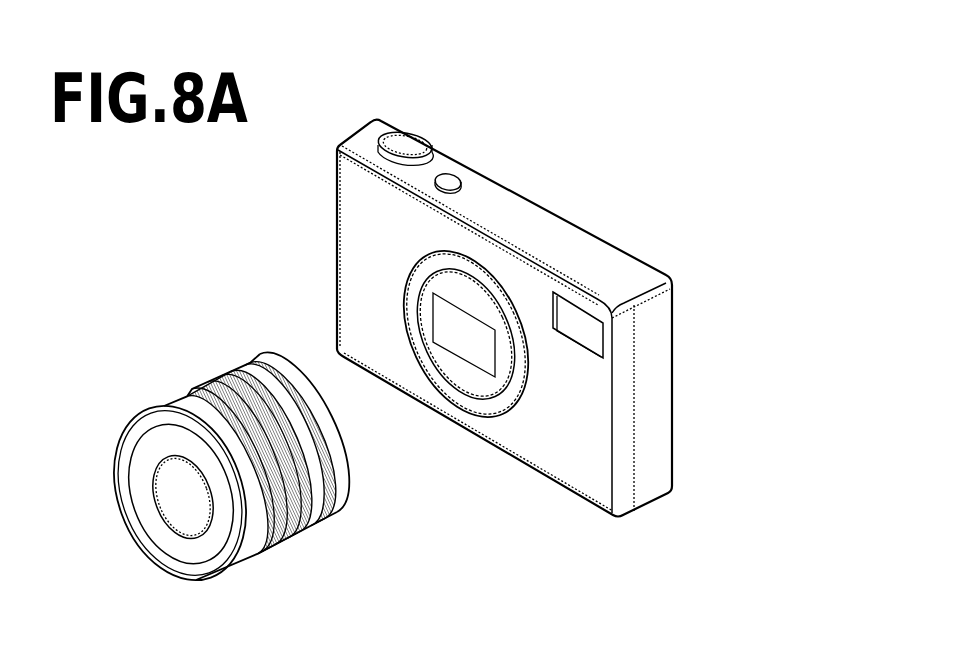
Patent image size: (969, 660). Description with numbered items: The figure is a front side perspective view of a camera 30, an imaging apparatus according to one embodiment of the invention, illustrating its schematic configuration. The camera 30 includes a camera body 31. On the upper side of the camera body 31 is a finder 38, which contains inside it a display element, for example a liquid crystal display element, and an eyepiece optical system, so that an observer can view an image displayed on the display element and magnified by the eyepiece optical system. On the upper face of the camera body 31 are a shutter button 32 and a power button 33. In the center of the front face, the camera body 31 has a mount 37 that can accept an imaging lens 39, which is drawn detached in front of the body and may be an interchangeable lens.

The camera 30 is at (533, 299).
The camera body 31 is at (663, 363).
The shutter button 32 is at (412, 139).
The power button 33 is at (449, 177).
The mount 37 is at (483, 403).
The finder 38 is at (571, 312).
The imaging lens 39 is at (167, 411).